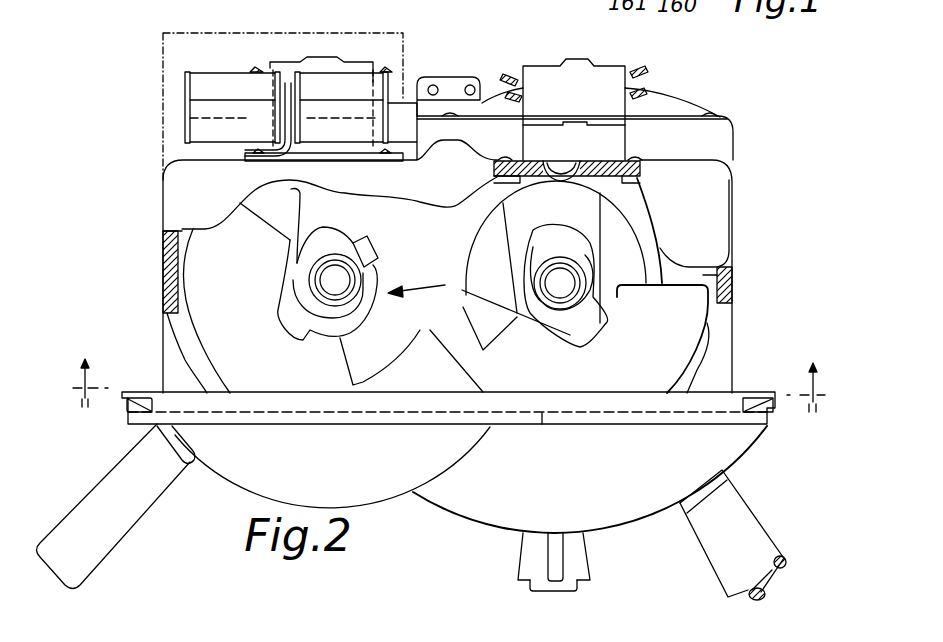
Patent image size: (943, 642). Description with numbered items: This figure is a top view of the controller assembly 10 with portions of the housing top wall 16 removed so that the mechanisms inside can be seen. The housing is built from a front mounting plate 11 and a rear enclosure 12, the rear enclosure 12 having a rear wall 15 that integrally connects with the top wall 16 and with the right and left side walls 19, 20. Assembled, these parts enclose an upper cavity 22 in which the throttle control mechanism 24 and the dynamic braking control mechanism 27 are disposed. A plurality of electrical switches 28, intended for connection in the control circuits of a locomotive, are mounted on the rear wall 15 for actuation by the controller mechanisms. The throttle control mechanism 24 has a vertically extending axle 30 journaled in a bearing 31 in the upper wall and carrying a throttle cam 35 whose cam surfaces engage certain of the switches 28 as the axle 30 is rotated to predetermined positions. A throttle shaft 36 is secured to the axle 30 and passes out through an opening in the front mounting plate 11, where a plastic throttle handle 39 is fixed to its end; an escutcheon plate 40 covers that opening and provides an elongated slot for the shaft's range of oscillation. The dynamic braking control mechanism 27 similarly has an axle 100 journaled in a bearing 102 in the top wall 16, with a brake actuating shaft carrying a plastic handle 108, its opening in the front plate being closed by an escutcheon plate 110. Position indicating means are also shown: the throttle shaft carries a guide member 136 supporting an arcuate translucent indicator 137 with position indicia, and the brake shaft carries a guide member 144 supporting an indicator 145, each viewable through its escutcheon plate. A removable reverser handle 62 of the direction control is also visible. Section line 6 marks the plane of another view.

The controller assembly 10 is at (750, 129).
The rear enclosure 12 is at (736, 122).
The rear wall 15 is at (674, 163).
The electrical switches 28 is at (325, 62).
The throttle control mechanism 24 is at (632, 202).
The top wall 16 is at (448, 200).
The axle 100 is at (337, 270).
The bearing 102 is at (355, 300).
The throttle cam 35 is at (416, 277).
The dynamic braking control mechanism 27 is at (463, 289).
The guide member 144 is at (405, 320).
The axle 30 is at (567, 276).
The bearing 31 is at (583, 277).
The guide member 136 is at (648, 258).
The upper cavity 22 is at (720, 266).
The right side wall 19 is at (727, 289).
The arcuate translucent indicator 137 is at (697, 324).
The left side wall 20 is at (163, 265).
The indicator 145 is at (198, 303).
The front mounting plate 11 is at (641, 412).
The escutcheon plate 110 is at (395, 485).
The escutcheon plate 40 is at (743, 443).
The plastic handle 108 is at (132, 504).
The plastic throttle handle 39 is at (753, 532).
The throttle shaft 36 is at (773, 580).
The reverser handle 62 is at (573, 557).
The section line 6- 6 is at (449, 369).